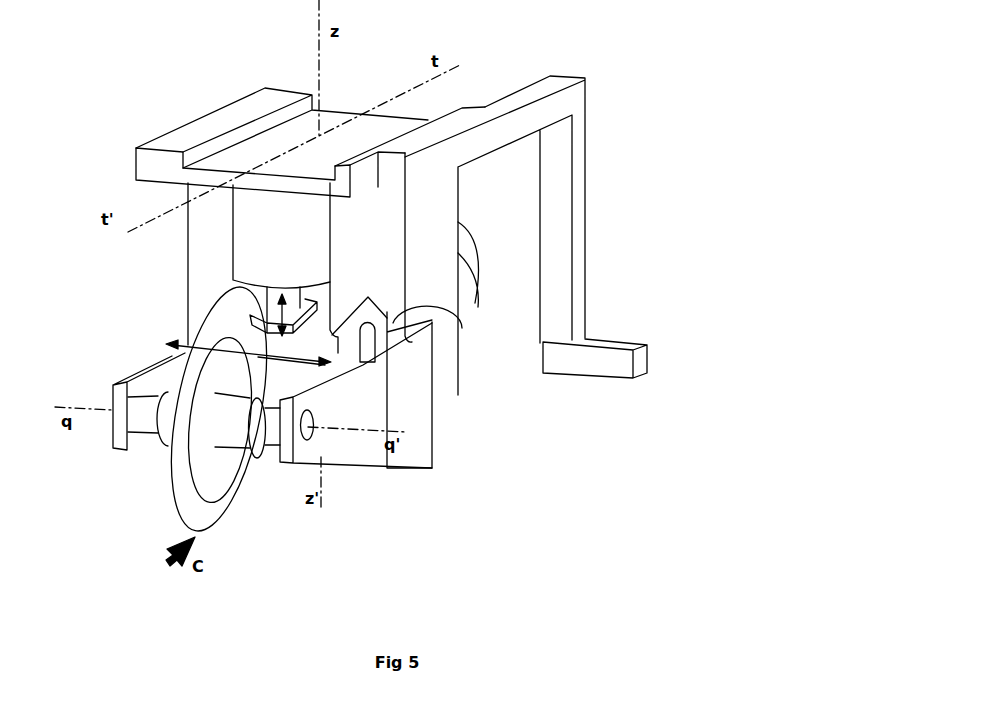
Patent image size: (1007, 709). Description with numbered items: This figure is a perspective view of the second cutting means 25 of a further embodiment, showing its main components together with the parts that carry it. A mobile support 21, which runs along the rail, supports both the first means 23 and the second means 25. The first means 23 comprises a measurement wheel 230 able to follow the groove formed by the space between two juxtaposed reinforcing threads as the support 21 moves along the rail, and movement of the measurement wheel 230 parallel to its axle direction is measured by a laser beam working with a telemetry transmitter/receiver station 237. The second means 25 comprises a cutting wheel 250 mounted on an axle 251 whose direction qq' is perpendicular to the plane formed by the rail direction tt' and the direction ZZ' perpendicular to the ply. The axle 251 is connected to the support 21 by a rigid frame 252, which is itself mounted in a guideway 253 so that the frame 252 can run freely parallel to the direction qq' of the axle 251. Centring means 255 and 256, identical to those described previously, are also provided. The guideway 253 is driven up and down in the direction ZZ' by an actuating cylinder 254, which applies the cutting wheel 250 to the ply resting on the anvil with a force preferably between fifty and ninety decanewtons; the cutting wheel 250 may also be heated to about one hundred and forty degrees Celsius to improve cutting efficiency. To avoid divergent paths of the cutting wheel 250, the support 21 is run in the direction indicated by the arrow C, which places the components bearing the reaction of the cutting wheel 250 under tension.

The mobile support 21 is at (227, 113).
The first means 23 is at (606, 208).
The measurement wheel 230 is at (467, 252).
The second means 25 is at (108, 342).
The cutting wheel 250 is at (185, 495).
The axle 251 is at (152, 418).
The rigid frame 252 is at (333, 435).
The guideway 253 is at (263, 288).
The actuating cylinder 254 is at (257, 245).
The centring means 255 is at (368, 352).
The centring means 256 is at (460, 325).
The telemetry transmitter/receiver station 237 is at (617, 370).